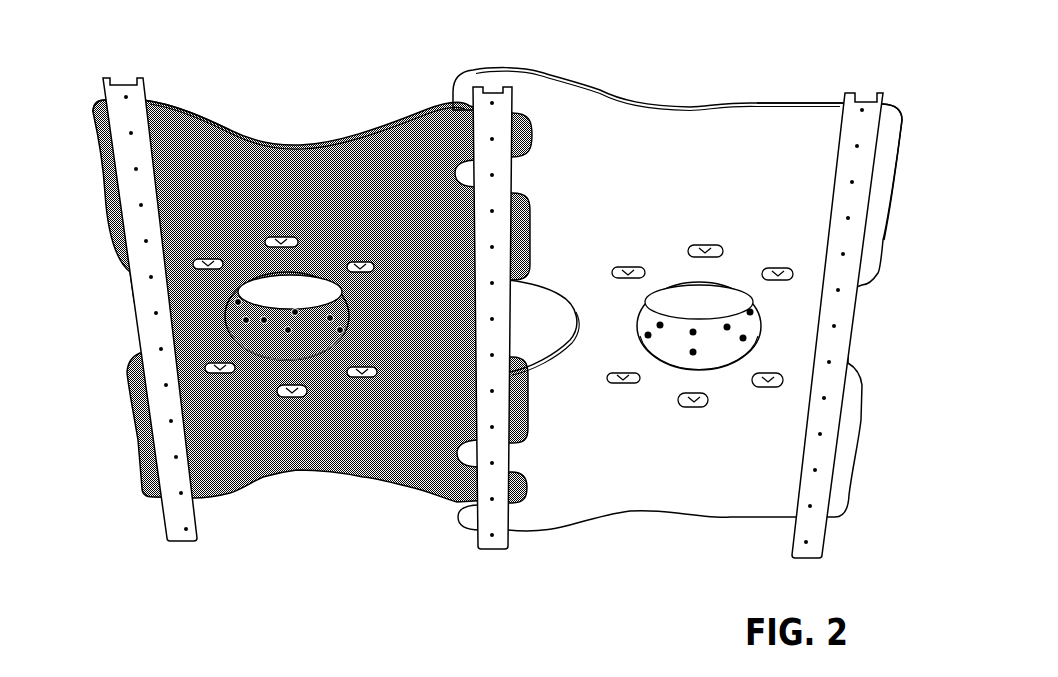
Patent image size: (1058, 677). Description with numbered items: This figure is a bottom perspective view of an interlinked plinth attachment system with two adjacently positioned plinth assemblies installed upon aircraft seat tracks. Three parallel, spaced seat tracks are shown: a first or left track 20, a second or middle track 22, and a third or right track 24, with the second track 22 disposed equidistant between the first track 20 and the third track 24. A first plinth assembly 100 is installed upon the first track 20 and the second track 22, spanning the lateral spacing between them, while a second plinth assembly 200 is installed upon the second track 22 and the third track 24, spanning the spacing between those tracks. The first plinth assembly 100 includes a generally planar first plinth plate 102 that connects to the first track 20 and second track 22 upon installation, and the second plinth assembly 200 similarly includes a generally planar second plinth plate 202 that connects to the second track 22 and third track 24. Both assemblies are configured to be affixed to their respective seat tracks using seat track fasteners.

The first track 20 is at (172, 528).
The second track 22 is at (493, 528).
The third track 24 is at (808, 533).
The first plinth assembly 100 is at (286, 524).
The first plinth plate 102 is at (93, 93).
The second plinth assembly 200 is at (659, 566).
The second plinth plate 202 is at (893, 105).